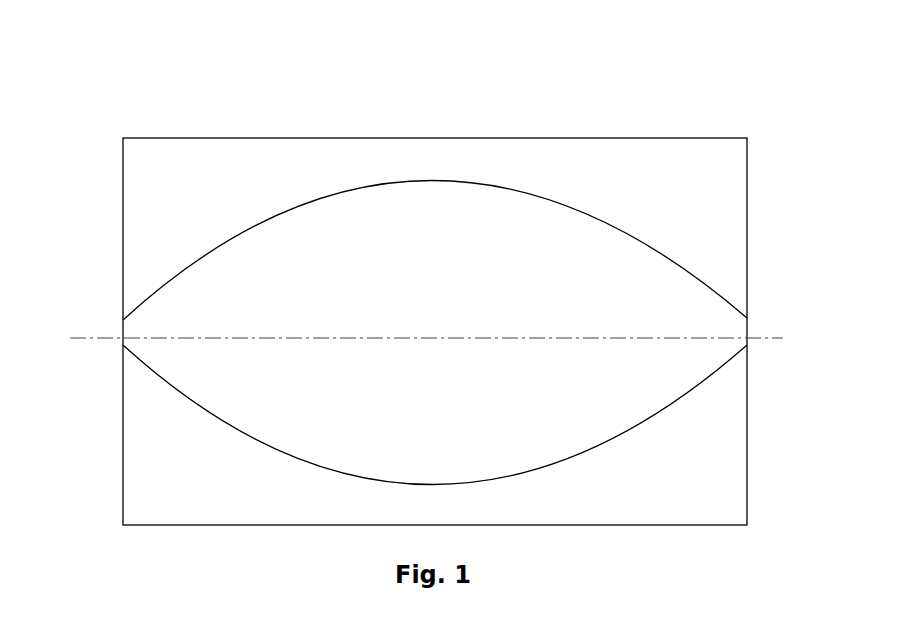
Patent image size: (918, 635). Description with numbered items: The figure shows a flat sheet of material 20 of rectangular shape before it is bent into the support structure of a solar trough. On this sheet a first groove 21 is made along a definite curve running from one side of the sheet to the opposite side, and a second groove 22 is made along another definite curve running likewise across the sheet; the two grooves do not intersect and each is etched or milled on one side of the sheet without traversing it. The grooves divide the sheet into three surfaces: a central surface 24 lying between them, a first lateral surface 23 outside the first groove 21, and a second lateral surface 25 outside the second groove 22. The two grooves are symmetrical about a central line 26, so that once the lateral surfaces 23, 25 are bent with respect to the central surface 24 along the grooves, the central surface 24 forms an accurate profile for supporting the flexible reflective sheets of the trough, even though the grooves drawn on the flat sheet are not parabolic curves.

The flat sheet of material 20 is at (134, 109).
The first groove 21 is at (585, 225).
The second groove 22 is at (648, 405).
The first lateral surface 23 is at (157, 198).
The central surface 24 is at (285, 374).
The second lateral surface 25 is at (188, 490).
The central line 26 is at (620, 336).